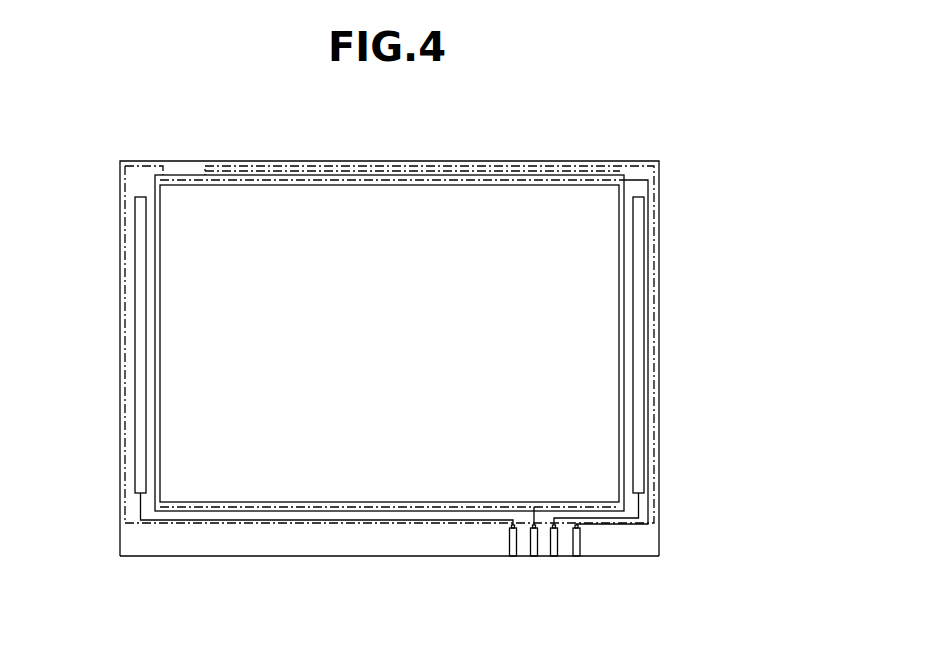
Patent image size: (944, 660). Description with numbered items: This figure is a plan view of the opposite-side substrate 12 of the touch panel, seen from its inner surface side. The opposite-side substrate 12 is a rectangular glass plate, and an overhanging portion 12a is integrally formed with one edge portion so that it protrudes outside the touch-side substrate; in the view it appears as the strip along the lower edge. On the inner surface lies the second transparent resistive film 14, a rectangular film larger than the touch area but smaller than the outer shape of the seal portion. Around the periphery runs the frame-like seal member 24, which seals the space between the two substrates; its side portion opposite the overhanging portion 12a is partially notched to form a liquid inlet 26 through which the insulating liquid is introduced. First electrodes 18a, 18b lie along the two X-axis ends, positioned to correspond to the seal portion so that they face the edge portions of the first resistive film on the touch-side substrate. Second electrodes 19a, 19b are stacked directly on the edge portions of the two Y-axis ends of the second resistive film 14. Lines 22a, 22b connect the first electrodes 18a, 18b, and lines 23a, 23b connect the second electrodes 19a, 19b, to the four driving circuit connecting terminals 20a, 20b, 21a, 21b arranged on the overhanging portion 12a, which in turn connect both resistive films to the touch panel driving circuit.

The liquid inlet 26 is at (182, 162).
The opposite-side substrate 12 is at (634, 160).
The overhanging portion 12a is at (340, 547).
The second transparent resistive film 14 is at (314, 203).
The frame-like seal member 24 is at (538, 168).
The first electrode 18a is at (140, 361).
The first electrode 18b is at (638, 240).
The second electrode 19a is at (420, 182).
The second electrode 19b is at (407, 505).
The line 22a is at (272, 521).
The line 22b is at (574, 515).
The line 23a is at (649, 465).
The line 23b is at (530, 512).
The driving circuit connecting terminal 20a is at (513, 554).
The driving circuit connecting terminal 20b is at (556, 554).
The driving circuit connecting terminal 21a is at (578, 554).
The driving circuit connecting terminal 21b is at (531, 554).